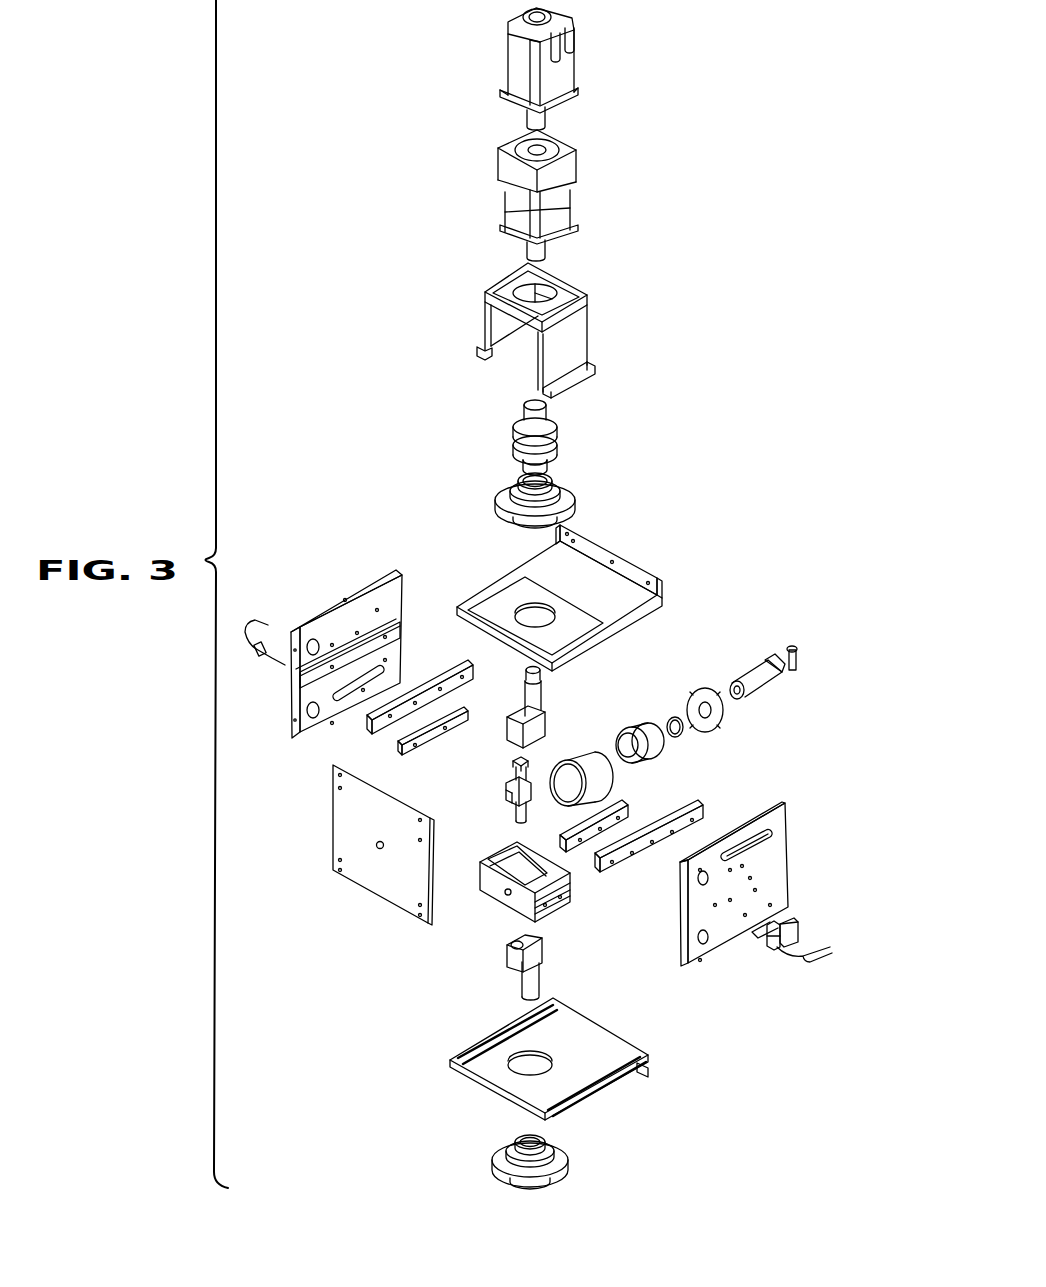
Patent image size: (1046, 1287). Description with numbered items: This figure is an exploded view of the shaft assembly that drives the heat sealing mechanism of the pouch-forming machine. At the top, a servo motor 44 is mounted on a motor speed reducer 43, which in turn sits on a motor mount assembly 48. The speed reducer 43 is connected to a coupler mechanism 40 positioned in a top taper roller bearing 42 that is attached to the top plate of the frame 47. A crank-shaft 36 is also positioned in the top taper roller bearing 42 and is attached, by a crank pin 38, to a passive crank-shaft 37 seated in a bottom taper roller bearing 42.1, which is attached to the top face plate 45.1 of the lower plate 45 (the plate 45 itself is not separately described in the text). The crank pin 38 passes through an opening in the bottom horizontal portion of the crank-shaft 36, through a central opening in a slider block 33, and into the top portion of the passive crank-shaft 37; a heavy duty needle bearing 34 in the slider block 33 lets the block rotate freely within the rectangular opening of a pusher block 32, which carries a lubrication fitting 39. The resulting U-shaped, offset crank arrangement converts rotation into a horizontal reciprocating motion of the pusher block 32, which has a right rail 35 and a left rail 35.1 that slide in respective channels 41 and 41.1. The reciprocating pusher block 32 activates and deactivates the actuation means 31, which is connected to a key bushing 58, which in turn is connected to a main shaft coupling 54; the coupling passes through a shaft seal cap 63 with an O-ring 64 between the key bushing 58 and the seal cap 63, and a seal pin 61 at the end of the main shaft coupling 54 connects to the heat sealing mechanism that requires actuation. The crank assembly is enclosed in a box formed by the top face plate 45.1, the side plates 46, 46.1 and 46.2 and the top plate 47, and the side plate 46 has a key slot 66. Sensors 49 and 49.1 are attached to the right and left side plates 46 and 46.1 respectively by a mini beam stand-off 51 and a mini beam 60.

The servo motor 44 is at (513, 62).
The motor speed reducer 43 is at (515, 208).
The motor mount assembly 48 is at (483, 306).
The coupler mechanism 40 is at (512, 431).
The top taper roller bearing 42 is at (498, 491).
The top plate of the frame 47 is at (613, 585).
The sensor 49.1 is at (250, 628).
The side plate 46.1 is at (312, 735).
The channel 41.1 is at (430, 692).
The left rail 35.1 is at (437, 750).
The side plate 46.2 is at (362, 886).
The crank pin 38 is at (513, 772).
The slider block 33 is at (511, 792).
The heavy duty needle bearing 34 is at (511, 806).
The crank-shaft 36 is at (540, 692).
The actuation means 31 is at (563, 751).
The key bushing 58 is at (640, 722).
The O-ring 64 is at (680, 736).
The shaft seal cap 63 is at (703, 690).
The main shaft coupling 54 is at (750, 668).
The seal pin 61 is at (792, 645).
The right rail 35 is at (625, 816).
The channel 41 is at (700, 816).
The side plate 46 is at (729, 884).
The key slot 66 is at (775, 838).
The mini beam stand-off 51 is at (775, 920).
The mini beam 60 is at (800, 932).
The sensor 49 is at (805, 958).
The lubrication fitting 39 is at (503, 895).
The pusher block 32 is at (508, 895).
The passive crank-shaft 37 is at (535, 978).
The bottom plate 45 is at (650, 1069).
The top face plate 45.1 is at (610, 1088).
The bottom taper roller bearing 42.1 is at (565, 1162).